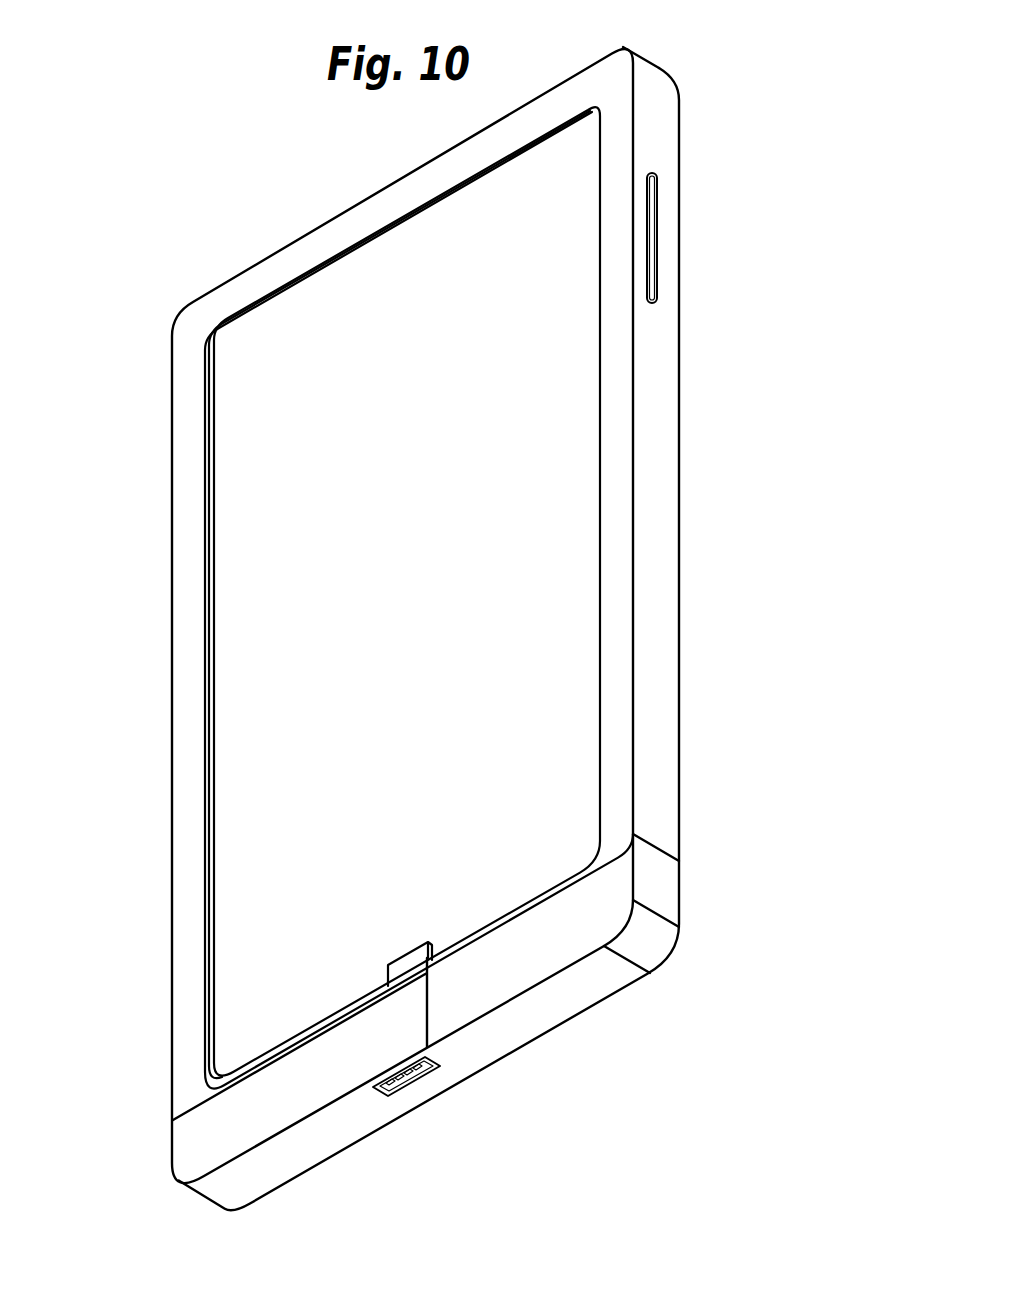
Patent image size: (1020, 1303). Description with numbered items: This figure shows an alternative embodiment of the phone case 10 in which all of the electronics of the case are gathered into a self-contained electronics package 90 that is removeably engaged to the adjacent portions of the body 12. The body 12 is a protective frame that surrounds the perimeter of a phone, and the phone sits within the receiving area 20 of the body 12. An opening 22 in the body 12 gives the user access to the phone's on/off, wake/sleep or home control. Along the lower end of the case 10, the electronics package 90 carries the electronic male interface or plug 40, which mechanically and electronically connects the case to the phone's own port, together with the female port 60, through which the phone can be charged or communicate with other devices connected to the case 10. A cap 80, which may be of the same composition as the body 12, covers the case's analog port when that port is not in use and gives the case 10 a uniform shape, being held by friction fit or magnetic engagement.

The phone case 10 is at (156, 278).
The body 12 is at (613, 70).
The receiving area 20 is at (243, 630).
The opening 22 is at (658, 230).
The plug 40 is at (396, 961).
The female port 60 is at (412, 1085).
The cap 80 is at (583, 932).
The electronics package 90 is at (190, 1141).